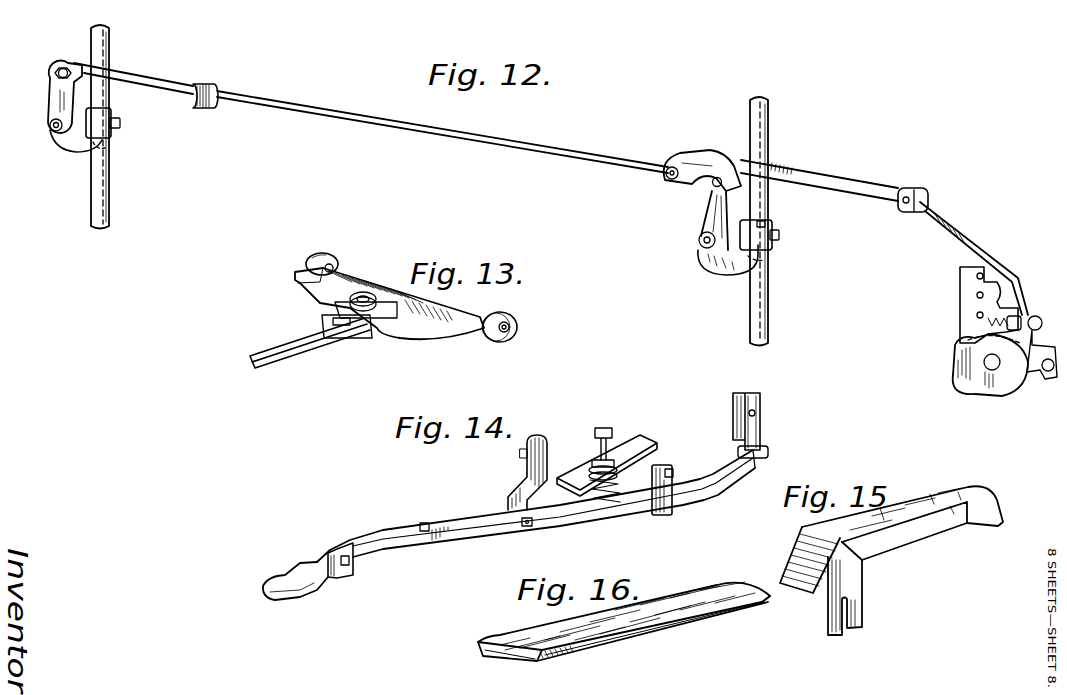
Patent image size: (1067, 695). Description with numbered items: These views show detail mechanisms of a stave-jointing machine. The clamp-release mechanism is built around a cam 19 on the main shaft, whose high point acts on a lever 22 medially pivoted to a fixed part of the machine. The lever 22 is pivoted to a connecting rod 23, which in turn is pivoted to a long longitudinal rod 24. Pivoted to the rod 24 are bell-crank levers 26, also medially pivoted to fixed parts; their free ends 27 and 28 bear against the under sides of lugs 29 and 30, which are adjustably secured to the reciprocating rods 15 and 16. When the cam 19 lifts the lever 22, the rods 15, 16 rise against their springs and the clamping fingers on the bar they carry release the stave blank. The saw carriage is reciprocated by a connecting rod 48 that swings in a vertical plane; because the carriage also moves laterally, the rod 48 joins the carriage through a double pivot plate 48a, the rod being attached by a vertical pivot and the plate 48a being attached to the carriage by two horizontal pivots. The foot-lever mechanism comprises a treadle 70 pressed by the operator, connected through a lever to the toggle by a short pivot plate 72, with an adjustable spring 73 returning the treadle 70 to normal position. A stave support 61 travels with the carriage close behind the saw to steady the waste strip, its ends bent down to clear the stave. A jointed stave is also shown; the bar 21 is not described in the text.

In FIG. 12, the reciprocating rod 15 is at (110, 186).
In FIG. 12, the reciprocating rod 16 is at (766, 303).
In FIG. 12, the cam 19 is at (1004, 394).
In FIG. 12, the lever 22 is at (962, 238).
In FIG. 12, the connecting rod 23 is at (868, 170).
In FIG. 12, the longitudinal rod 24 is at (561, 153).
In FIG. 12, the bell-crank lever 26 is at (50, 101).
In FIG. 12, the free end 27 is at (112, 141).
In FIG. 12, the free end 28 is at (768, 262).
In FIG. 12, the lug 29 is at (112, 113).
In FIG. 12, the lug 30 is at (774, 227).
In FIG. 13, the connecting rod 48 is at (316, 342).
In FIG. 13, the double pivot plate 48a is at (420, 328).
In FIG. 15, the stave support 61 is at (914, 498).
In FIG. 14, the treadle 70 is at (284, 574).
In FIG. 14, the main bar 21 is at (536, 506).
In FIG. 14, the pivot plate 72 is at (760, 438).
In FIG. 14, the adjustable spring 73 is at (606, 483).